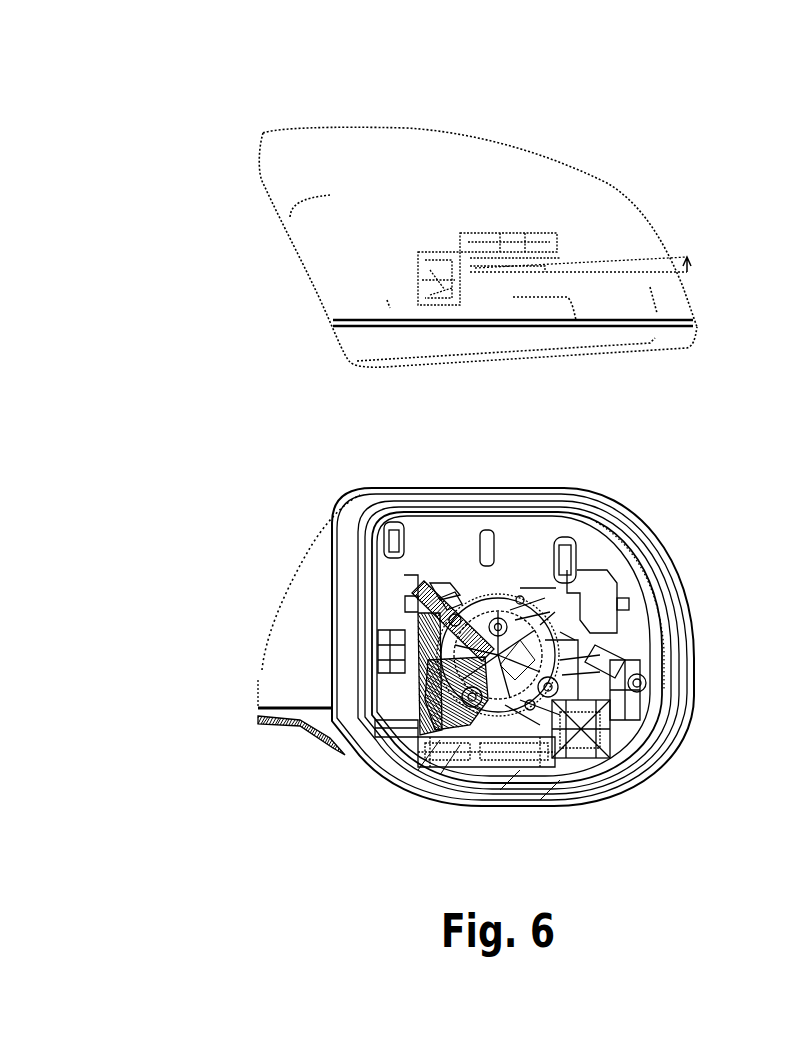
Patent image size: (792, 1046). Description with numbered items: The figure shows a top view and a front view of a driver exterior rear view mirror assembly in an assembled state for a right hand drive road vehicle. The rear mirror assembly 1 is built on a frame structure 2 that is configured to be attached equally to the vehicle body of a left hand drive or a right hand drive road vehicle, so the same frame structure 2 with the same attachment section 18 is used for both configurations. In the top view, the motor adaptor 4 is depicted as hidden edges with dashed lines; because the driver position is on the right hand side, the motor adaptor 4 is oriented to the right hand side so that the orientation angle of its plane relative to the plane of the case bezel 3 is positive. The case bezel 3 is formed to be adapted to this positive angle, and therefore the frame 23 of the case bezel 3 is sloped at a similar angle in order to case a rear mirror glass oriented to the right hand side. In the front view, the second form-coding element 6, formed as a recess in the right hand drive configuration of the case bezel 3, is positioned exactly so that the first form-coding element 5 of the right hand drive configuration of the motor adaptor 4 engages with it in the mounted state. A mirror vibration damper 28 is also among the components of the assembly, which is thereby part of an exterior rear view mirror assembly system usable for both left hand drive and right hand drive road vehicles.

The rear mirror assembly 1 is at (678, 140).
The frame structure 2 is at (470, 740).
The case bezel 3 is at (362, 338).
The motor adaptor 4 is at (493, 253).
The first form-coding element 5 is at (447, 587).
The second form-coding element 6 is at (426, 590).
The attachment section 18 is at (293, 728).
The frame 23 is at (570, 353).
The mirror vibration damper 28 is at (416, 603).